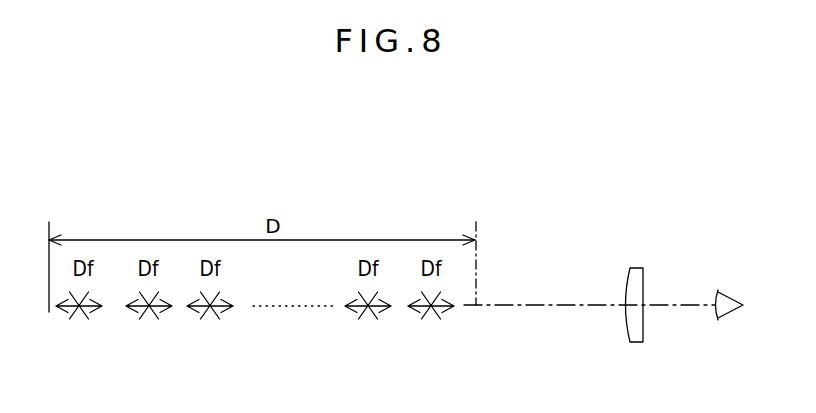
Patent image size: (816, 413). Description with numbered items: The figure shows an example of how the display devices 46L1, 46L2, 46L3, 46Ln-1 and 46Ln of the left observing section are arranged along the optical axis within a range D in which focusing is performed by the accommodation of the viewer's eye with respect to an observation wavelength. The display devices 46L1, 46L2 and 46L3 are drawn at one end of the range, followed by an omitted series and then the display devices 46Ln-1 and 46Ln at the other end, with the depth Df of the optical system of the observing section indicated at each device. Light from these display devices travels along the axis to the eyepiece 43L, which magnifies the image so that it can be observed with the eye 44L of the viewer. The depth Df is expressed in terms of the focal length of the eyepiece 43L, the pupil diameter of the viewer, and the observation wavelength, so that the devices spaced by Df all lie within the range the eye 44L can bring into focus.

The eyepiece 43L is at (633, 267).
The eye 44L is at (731, 290).
The display device 46L1 is at (79, 313).
The display device 46L2 is at (149, 313).
The display device 46L3 is at (210, 313).
The display device 46Ln-1 is at (368, 313).
The display device 46Ln is at (431, 313).